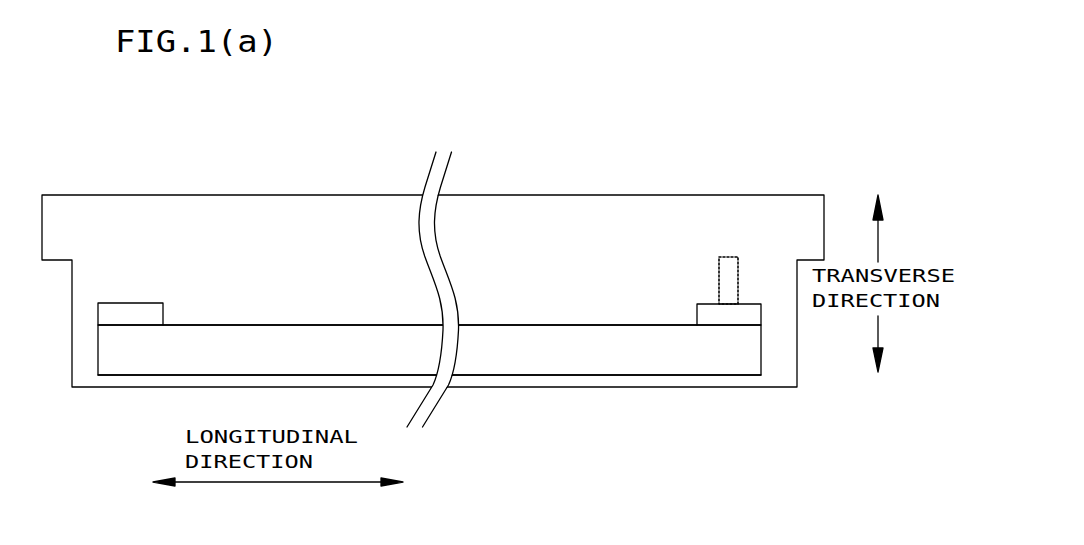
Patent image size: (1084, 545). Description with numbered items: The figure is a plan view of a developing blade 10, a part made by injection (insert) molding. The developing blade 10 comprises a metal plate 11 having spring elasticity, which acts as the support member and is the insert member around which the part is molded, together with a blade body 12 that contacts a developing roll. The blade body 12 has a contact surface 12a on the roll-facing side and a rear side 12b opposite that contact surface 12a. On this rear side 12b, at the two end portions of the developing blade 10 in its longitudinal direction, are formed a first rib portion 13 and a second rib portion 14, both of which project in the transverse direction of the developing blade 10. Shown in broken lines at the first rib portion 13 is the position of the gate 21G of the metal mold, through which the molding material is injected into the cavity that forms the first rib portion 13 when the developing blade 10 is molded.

The developing blade 10 is at (489, 163).
The metal plate 11 is at (228, 225).
The blade body 12 is at (513, 362).
The contact surface 12a is at (565, 372).
The rear side 12b is at (562, 325).
The first rib portion 13 is at (718, 313).
The second rib portion 14 is at (115, 310).
The gate 21G is at (718, 277).